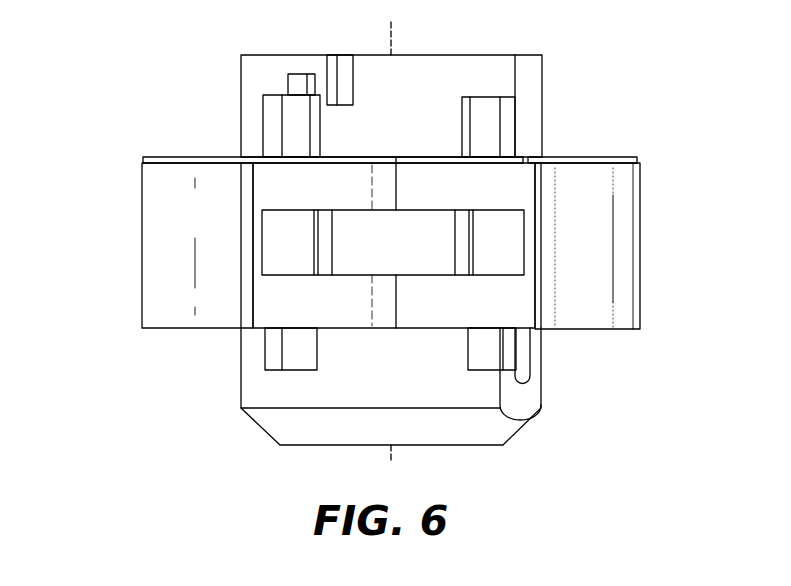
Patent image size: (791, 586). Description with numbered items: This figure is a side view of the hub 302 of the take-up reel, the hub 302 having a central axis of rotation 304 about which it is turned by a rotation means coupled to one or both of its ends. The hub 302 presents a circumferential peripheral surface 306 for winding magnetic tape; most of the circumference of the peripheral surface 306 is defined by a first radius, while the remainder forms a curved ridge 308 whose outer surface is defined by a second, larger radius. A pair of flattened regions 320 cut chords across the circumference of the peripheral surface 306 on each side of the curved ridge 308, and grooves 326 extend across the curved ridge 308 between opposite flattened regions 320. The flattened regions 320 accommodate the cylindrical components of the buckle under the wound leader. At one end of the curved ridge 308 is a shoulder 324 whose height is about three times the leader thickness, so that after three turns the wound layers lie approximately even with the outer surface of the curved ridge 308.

The hub 302 is at (660, 165).
The axis of rotation 304 is at (400, 40).
The peripheral surface 306 is at (625, 245).
The curved ridge 308 is at (405, 252).
The flattened regions 320 is at (295, 178).
The shoulder 324 is at (167, 235).
The grooves 326 is at (323, 250).